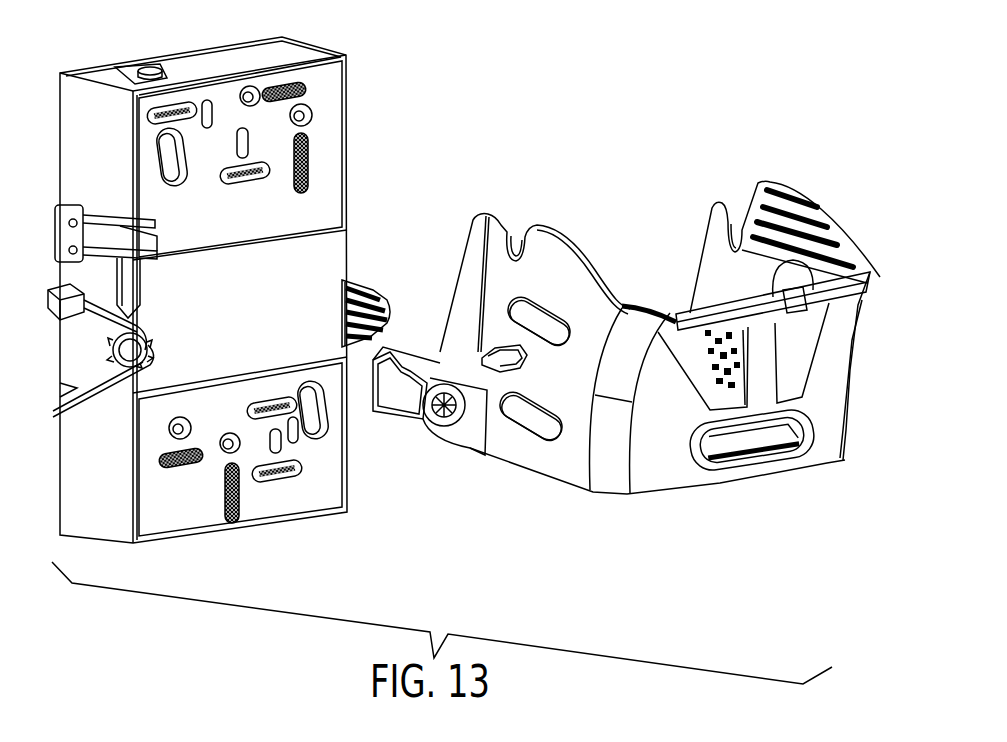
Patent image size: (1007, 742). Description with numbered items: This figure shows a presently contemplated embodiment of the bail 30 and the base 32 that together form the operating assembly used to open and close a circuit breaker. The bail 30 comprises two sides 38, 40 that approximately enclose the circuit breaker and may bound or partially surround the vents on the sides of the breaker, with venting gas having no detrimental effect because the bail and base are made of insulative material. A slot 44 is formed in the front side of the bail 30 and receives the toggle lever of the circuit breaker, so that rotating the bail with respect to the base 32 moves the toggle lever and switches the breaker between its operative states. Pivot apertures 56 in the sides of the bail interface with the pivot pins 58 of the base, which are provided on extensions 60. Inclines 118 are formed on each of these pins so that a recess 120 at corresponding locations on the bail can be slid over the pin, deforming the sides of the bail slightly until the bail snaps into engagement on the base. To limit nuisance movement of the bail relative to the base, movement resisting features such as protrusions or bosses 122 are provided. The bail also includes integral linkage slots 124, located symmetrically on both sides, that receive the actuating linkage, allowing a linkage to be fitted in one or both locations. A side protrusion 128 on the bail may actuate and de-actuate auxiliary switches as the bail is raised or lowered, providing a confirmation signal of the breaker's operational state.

The bail 30 is at (624, 351).
The base 32 is at (92, 102).
The side 38 is at (777, 182).
The side 40 is at (579, 389).
The slot 44 is at (750, 455).
The pivot aperture 56 is at (450, 410).
The pivot pin 58 is at (133, 330).
The extension 60 is at (87, 378).
The incline 118 is at (150, 342).
The recess 120 is at (400, 395).
The boss 122 is at (82, 291).
The linkage slot 124 is at (517, 242).
The side protrusion 128 is at (493, 347).